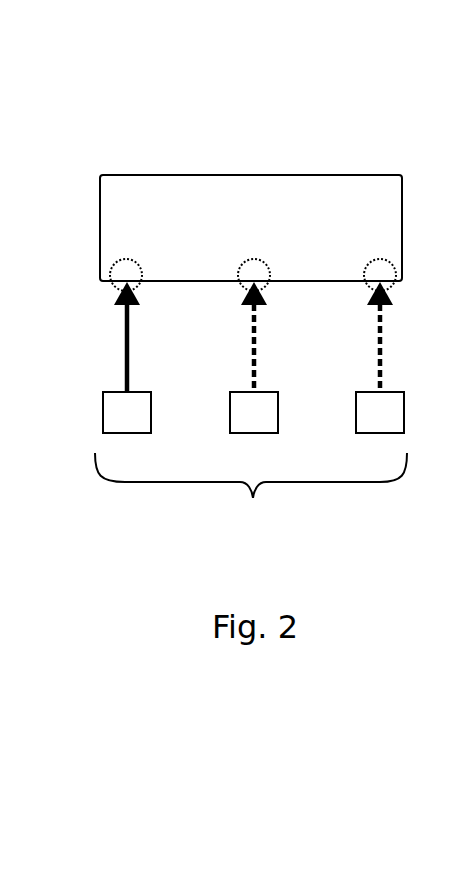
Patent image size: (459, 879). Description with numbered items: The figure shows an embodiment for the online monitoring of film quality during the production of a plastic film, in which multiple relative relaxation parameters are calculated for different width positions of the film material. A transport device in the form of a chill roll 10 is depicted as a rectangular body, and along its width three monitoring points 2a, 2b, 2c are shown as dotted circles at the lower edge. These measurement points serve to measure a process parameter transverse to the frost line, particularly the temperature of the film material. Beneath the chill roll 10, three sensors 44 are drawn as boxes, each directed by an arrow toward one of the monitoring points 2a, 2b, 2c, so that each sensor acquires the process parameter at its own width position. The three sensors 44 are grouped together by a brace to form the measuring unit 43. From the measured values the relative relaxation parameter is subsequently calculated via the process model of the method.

The chill roll 10 is at (206, 203).
The monitoring point 2a is at (117, 260).
The monitoring point 2b is at (244, 260).
The monitoring point 2c is at (373, 260).
The sensors 44 is at (110, 425).
The measuring unit 43 is at (251, 496).